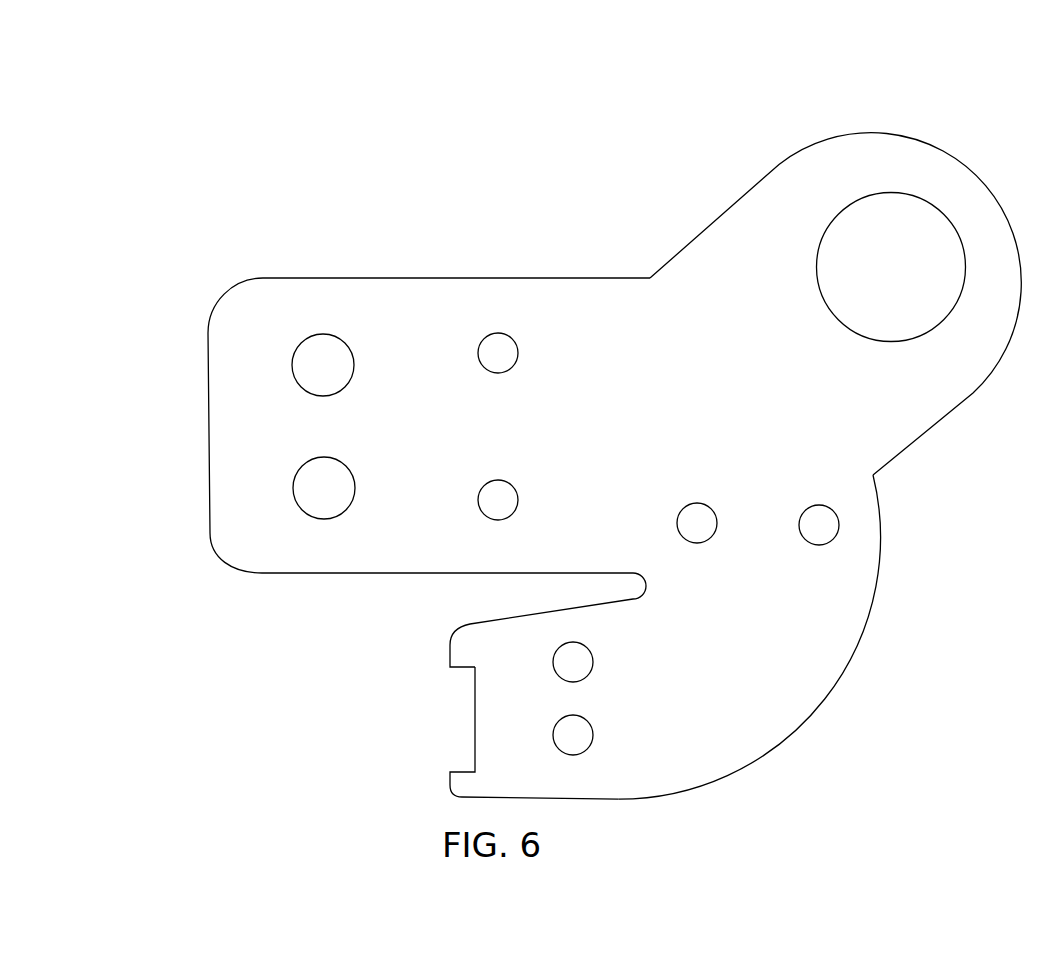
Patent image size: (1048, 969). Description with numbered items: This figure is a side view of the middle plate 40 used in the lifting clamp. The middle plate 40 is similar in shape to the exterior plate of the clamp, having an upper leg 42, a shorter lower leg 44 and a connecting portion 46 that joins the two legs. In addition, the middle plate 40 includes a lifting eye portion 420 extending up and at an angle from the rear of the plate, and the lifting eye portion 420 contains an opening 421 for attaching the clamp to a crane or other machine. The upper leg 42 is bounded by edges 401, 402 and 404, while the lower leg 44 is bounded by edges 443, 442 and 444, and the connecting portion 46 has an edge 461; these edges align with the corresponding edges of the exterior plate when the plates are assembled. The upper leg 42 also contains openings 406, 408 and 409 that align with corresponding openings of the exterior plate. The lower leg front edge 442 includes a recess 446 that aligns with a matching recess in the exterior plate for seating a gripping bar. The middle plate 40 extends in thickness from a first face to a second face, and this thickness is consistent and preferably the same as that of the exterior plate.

The middle plate 40 is at (762, 101).
The upper leg 42 is at (517, 303).
The edge 401 is at (400, 278).
The edge 402 is at (208, 357).
The edge 404 is at (378, 573).
The opening 406 is at (343, 363).
The opening 408 is at (357, 480).
The openings 409 is at (805, 511).
The lifting eye portion 420 is at (975, 212).
The opening 421 is at (891, 267).
The lower leg 44 is at (672, 747).
The lower leg front edge 442 is at (448, 660).
The edge 443 is at (533, 617).
The edge 444 is at (633, 797).
The recess 446 is at (461, 730).
The connecting portion 46 is at (842, 590).
The edge 461 is at (840, 678).